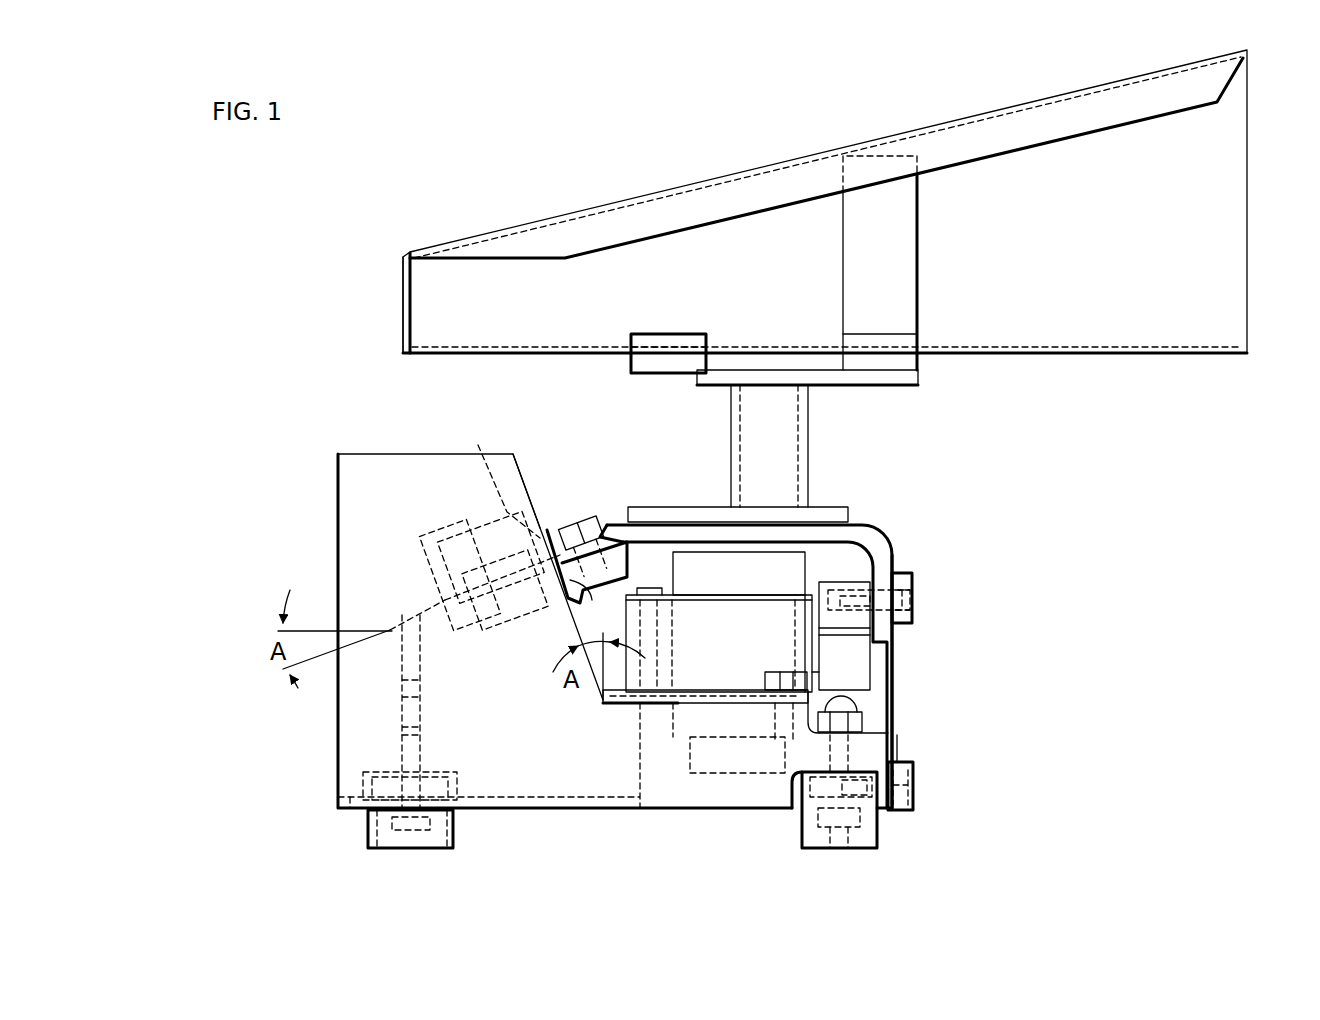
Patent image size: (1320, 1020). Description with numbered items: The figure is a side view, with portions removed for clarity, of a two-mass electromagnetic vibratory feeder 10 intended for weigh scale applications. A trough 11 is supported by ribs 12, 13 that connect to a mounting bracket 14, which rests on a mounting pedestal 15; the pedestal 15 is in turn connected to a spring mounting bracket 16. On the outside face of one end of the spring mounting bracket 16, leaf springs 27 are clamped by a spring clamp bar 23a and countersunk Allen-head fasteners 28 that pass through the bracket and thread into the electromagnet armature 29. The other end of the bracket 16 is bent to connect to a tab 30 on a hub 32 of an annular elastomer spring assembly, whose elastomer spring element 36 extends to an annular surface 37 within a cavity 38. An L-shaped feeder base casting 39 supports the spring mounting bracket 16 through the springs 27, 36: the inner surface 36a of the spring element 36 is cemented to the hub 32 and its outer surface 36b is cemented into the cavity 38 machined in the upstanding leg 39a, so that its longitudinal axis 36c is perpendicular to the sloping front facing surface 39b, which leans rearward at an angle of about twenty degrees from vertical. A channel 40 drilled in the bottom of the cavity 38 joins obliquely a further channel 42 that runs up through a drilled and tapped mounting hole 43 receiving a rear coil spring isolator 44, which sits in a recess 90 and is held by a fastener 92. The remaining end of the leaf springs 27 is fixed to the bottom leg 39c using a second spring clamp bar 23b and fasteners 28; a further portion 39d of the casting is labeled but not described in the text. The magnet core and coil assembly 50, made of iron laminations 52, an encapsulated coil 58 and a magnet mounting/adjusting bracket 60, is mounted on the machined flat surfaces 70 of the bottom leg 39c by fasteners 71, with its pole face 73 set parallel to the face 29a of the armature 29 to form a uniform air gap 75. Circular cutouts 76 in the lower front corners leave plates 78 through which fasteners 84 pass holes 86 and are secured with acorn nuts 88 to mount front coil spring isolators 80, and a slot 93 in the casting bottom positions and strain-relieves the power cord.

The two-mass electromagnetic vibratory feeder 10 is at (592, 140).
The trough 11 is at (792, 150).
The rib 12 is at (918, 265).
The rib 13 is at (660, 334).
The mounting bracket 14 is at (890, 385).
The mounting pedestal 15 is at (812, 466).
The spring mounting bracket 16 is at (870, 530).
The spring clamp bar 23a is at (910, 575).
The second spring clamp bar 23b is at (915, 795).
The leaf springs 27 is at (896, 705).
The countersunk Allen-head fasteners 28 is at (880, 585).
The electromagnet armature 29 is at (858, 657).
The armature face 29a is at (822, 636).
The tab 30 is at (590, 606).
The hub 32 is at (478, 662).
The annular elastomer spring element 36 is at (608, 655).
The inner surface 36a is at (568, 566).
The outer surface 36b is at (496, 478).
The longitudinal axis 36c is at (392, 631).
The annular surface 37 is at (440, 530).
The cavity 38 is at (478, 520).
The feeder base casting 39 is at (615, 631).
The upstanding leg 39a is at (518, 498).
The front facing surface 39b is at (540, 520).
The bottom leg 39c is at (690, 800).
The housing side wall 39d is at (900, 755).
The channel 40 is at (400, 690).
The further channel 42 is at (402, 678).
The drilled and tapped mounting hole 43 is at (402, 738).
The rear coil spring isolator 44 is at (435, 850).
The magnet core and coil assembly 50 is at (724, 682).
The iron laminations 52 is at (742, 607).
The encapsulated coil 58 is at (815, 560).
The magnet mounting/adjusting bracket 60 is at (608, 703).
The machined flat surfaces 70 is at (807, 673).
The fasteners 71 is at (767, 674).
The pole face 73 is at (815, 672).
The uniform air gap 75 is at (820, 640).
The circular cutouts 76 is at (793, 812).
The plate 78 is at (882, 748).
The front coil spring isolators 80 is at (848, 848).
The fasteners 84 is at (835, 830).
The holes 86 is at (803, 810).
The acorn nuts 88 is at (862, 716).
The recess 90 is at (457, 805).
The fastener 92 is at (398, 848).
The slot 93 is at (352, 812).